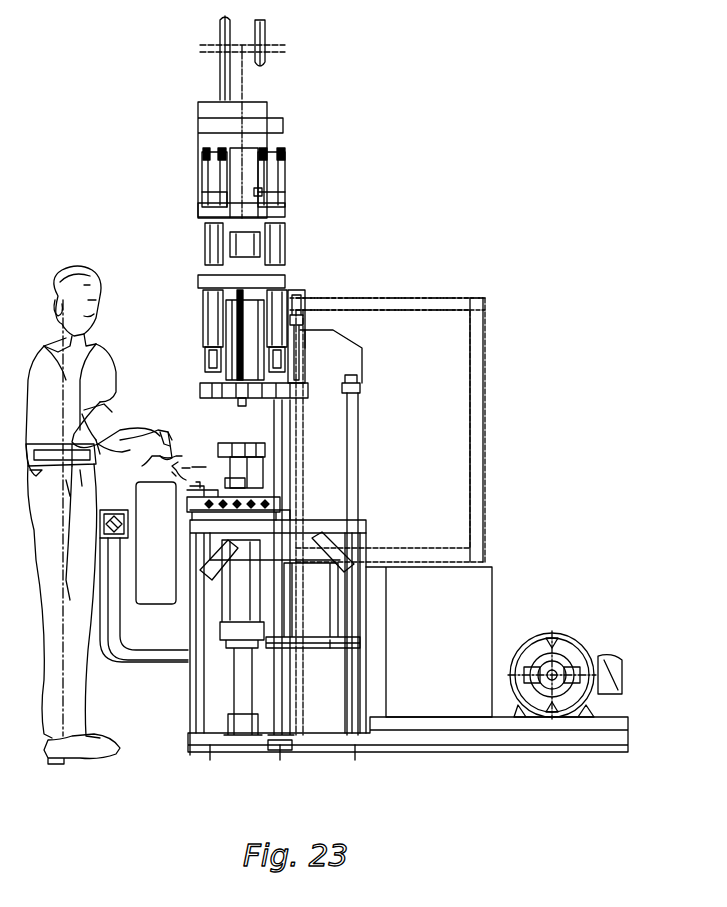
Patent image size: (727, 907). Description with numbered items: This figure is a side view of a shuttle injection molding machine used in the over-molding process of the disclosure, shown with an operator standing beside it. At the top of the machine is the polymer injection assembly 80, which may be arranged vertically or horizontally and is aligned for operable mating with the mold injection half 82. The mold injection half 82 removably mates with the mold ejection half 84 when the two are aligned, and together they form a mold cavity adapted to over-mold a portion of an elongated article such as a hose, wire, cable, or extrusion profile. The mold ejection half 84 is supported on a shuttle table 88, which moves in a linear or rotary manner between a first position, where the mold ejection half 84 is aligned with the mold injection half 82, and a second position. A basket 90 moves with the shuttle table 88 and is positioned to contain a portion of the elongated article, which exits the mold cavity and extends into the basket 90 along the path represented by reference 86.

The polymer injection assembly 80 is at (244, 400).
The mold injection half 82 is at (244, 458).
The mold ejection half 84 is at (228, 470).
The path of the elongated article 86 is at (180, 466).
The shuttle table 88 is at (188, 478).
The basket 90 is at (156, 600).